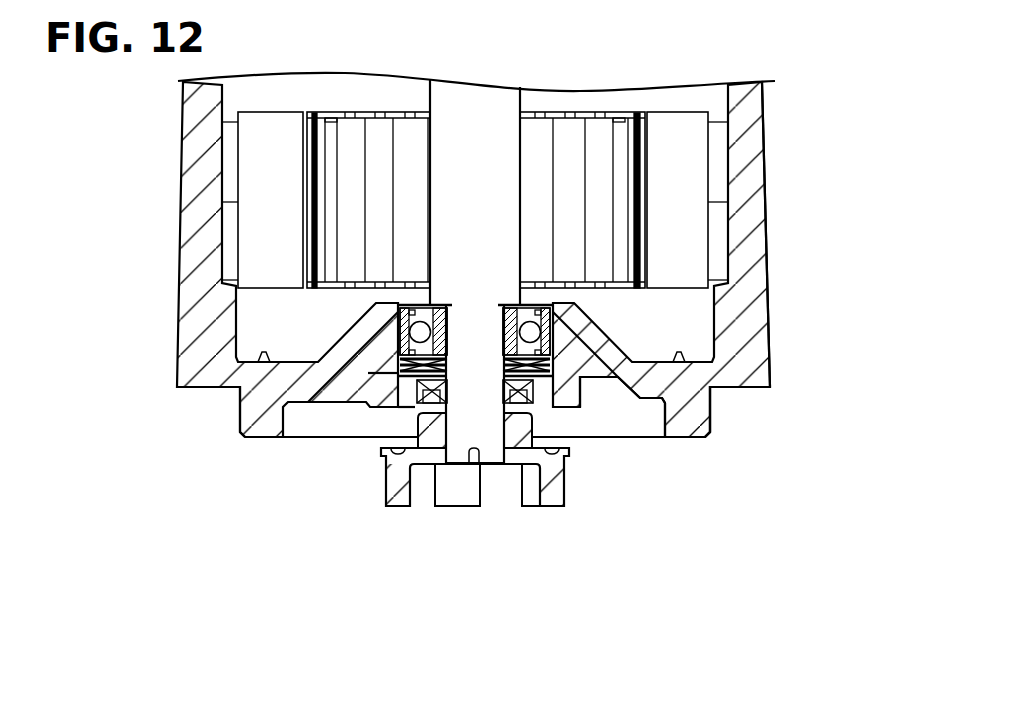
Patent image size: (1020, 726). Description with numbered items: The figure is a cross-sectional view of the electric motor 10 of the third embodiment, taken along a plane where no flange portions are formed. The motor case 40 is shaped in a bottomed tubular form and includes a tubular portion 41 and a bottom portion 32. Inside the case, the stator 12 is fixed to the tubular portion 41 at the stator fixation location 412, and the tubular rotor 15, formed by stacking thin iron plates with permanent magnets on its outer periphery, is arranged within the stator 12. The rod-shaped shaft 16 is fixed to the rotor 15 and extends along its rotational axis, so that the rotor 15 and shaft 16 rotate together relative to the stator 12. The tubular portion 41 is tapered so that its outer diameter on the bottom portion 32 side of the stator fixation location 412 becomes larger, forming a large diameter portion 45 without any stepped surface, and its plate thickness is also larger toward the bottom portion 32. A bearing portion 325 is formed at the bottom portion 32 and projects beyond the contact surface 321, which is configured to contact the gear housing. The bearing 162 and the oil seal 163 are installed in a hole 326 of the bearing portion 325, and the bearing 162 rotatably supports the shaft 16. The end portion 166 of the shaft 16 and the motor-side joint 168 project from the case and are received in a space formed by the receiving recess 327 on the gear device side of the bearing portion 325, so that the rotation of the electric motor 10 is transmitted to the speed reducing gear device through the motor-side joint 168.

The electric motor 10 is at (252, 572).
The stator 12 is at (232, 144).
The rotor 15 is at (377, 173).
The shaft 16 is at (443, 237).
The bearing 162 is at (418, 331).
The oil seal 163 is at (429, 412).
The end portion 166 is at (498, 465).
The motor-side joint 168 is at (555, 490).
The bottom portion 32 is at (302, 392).
The contact surface 321 is at (733, 392).
The bearing portion 325 is at (560, 402).
The hole 326 is at (550, 334).
The receiving recess 327 is at (664, 420).
The motor case 40 is at (771, 130).
The tubular portion 41 is at (766, 198).
The stator fixation location 412 is at (766, 159).
The large diameter portion 45 is at (771, 356).